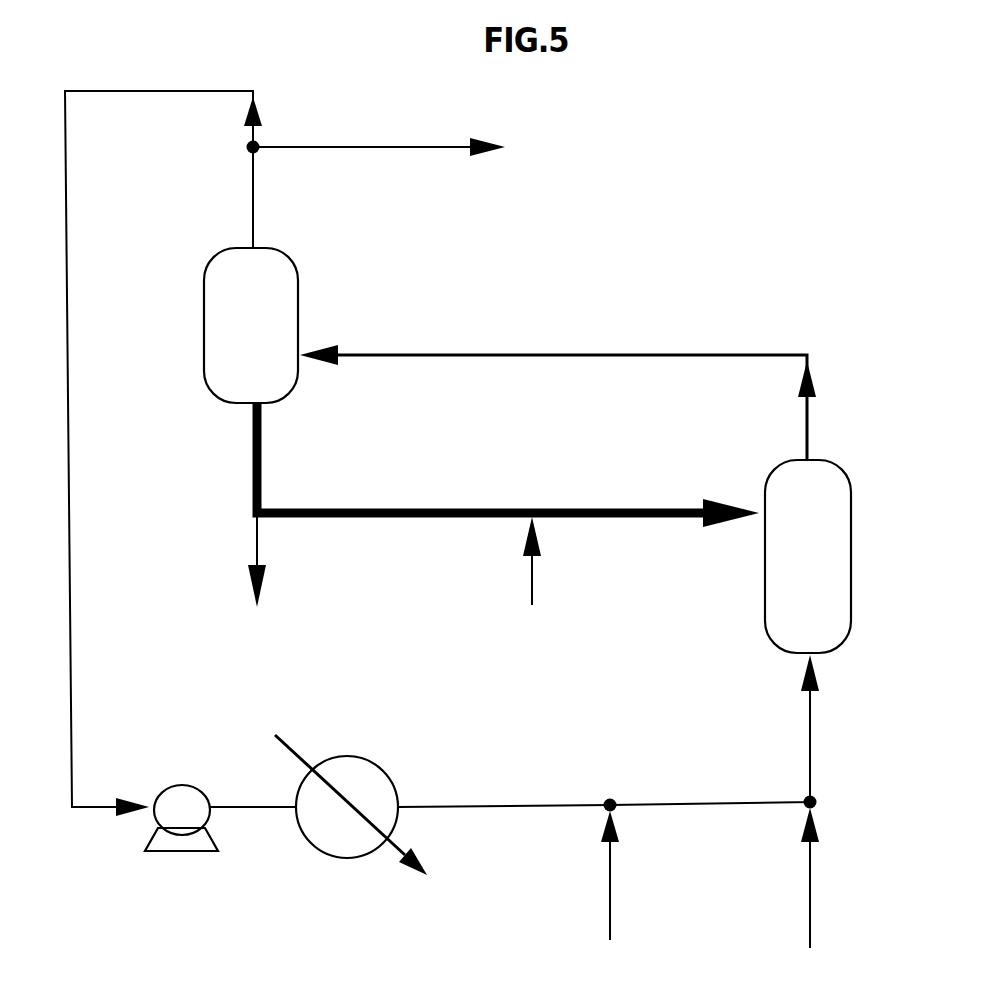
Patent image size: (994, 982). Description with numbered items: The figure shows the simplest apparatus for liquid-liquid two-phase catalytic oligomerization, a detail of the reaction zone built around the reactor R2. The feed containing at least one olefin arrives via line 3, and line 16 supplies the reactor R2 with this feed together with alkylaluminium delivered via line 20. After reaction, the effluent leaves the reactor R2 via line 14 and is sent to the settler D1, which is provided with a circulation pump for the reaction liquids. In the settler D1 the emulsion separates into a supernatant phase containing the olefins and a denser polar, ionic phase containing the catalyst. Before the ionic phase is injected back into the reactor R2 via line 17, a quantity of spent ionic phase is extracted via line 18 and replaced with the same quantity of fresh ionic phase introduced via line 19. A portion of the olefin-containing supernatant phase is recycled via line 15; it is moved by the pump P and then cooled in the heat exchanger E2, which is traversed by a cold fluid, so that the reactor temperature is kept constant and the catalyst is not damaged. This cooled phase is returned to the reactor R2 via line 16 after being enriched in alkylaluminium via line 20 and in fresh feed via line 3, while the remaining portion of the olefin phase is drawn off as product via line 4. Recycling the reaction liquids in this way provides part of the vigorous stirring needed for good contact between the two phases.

The line 3 is at (812, 915).
The overhead product line 4 is at (427, 147).
The line 14 is at (636, 355).
The line 15 is at (69, 466).
The line 16 is at (533, 805).
The line 17 is at (592, 508).
The line 18 is at (258, 550).
The line 19 is at (572, 548).
The line 20 is at (612, 918).
The settler D1 is at (251, 275).
The reactor R2 is at (808, 556).
The heat exchanger E2 is at (330, 858).
The pump P is at (220, 818).